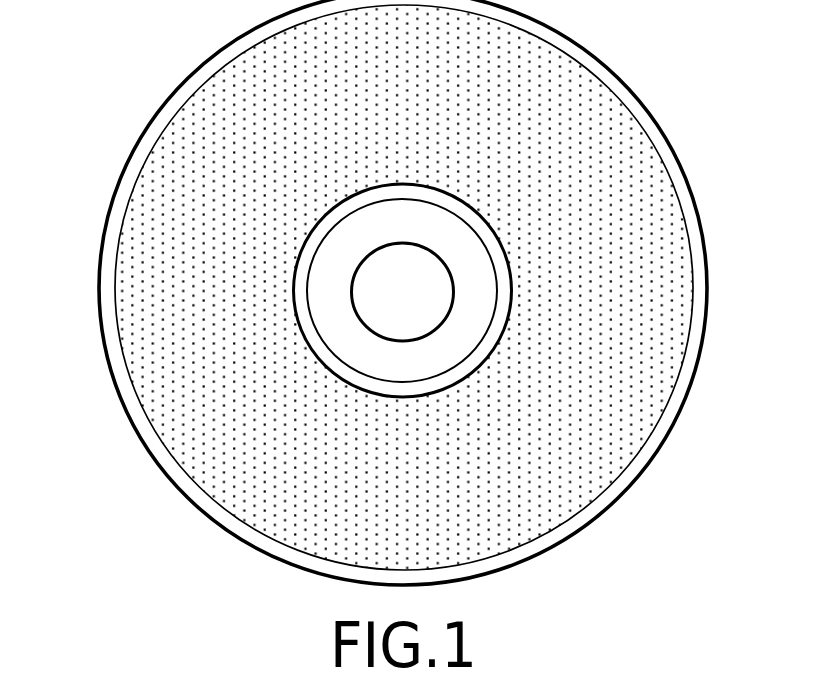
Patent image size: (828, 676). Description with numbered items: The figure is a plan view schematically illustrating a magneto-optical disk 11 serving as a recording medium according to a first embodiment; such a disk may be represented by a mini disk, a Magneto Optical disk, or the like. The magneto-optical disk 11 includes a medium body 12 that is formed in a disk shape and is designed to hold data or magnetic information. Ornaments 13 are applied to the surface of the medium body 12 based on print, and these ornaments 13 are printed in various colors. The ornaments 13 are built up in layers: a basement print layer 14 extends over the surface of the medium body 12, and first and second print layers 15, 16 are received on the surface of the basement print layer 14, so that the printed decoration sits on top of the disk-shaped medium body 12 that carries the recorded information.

The magneto-optical disk 11 is at (122, 118).
The medium body 12 is at (635, 100).
The ornaments 13 is at (516, 532).
The basement print layer 14 is at (246, 532).
The first print layer 15 is at (318, 496).
The second print layer 16 is at (322, 435).